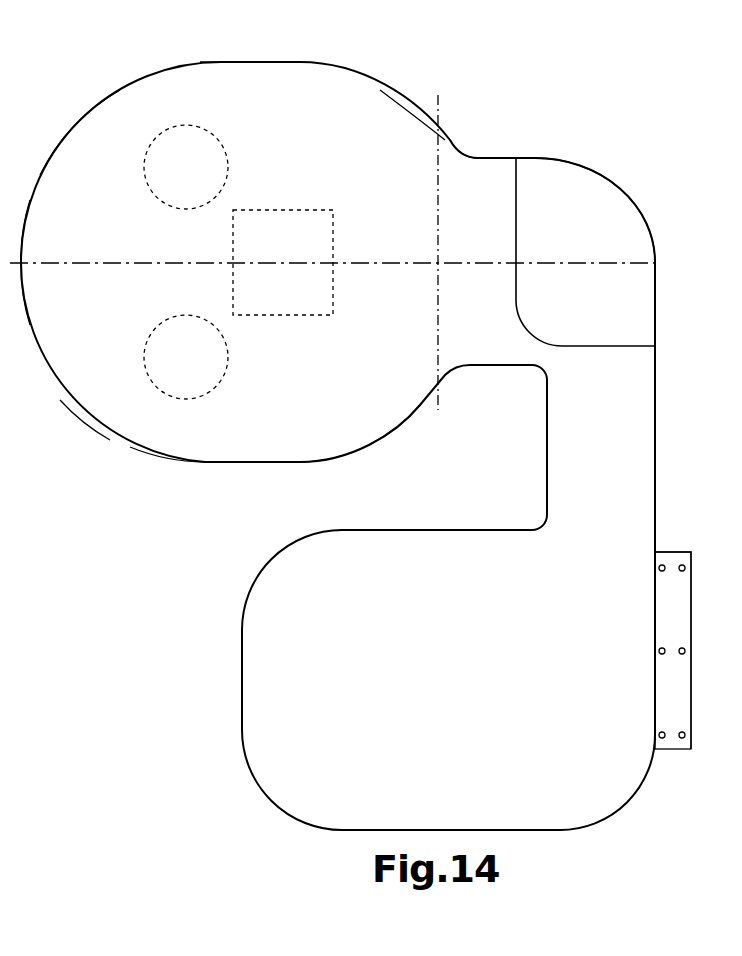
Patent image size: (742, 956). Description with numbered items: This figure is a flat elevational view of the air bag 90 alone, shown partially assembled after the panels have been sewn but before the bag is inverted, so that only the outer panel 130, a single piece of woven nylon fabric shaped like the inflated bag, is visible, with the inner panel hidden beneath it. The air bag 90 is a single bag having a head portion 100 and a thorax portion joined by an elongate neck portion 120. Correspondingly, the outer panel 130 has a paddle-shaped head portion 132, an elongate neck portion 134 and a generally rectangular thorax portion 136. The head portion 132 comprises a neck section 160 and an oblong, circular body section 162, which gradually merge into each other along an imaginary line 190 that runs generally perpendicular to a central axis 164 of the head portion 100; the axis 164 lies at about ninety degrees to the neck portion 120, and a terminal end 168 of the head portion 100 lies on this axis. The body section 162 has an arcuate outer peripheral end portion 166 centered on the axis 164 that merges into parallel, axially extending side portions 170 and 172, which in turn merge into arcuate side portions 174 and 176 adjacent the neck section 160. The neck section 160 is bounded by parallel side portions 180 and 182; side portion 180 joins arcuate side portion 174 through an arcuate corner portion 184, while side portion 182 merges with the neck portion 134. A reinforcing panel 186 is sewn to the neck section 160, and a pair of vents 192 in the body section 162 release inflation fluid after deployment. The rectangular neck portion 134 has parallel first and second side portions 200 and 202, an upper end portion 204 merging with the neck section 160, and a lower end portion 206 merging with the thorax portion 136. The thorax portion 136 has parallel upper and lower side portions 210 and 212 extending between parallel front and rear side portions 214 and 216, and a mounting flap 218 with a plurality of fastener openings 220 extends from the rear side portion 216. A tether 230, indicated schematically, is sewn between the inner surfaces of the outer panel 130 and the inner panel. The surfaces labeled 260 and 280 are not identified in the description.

The air bag 90 is at (123, 558).
The head portion 100 is at (115, 498).
The neck portion 120 is at (505, 467).
The outer panel 130 is at (153, 450).
The head portion 132 is at (82, 438).
The neck portion 134 is at (525, 418).
The thorax portion 136 is at (215, 710).
The neck section 160 is at (648, 223).
The body section 162 is at (274, 58).
The central axis 164 is at (20, 260).
The arcuate outer peripheral end portion 166 is at (40, 175).
The terminal end 168 is at (20, 265).
The side portion 170 is at (252, 62).
The side portion 172 is at (242, 463).
The arcuate side portion 174 is at (408, 108).
The arcuate side portion 176 is at (408, 418).
The side portion 180 is at (537, 157).
The side portion 182 is at (500, 365).
The arcuate corner portion 184 is at (456, 150).
The reinforcing panel 186 is at (517, 235).
The imaginary line 190 is at (437, 296).
The vents 192 is at (227, 175).
The first side portion 200 is at (655, 448).
The second side portion 202 is at (547, 478).
The upper end portion 204 is at (600, 392).
The lower end portion 206 is at (615, 510).
The upper side portion 210 is at (407, 530).
The lower side portion 212 is at (367, 830).
The front side portion 214 is at (242, 633).
The rear side portion 216 is at (655, 685).
The mounting flap 218 is at (692, 680).
The fastener openings 220 is at (662, 649).
The tether 230 is at (335, 232).
The surface 260 is at (0, 386).
The surface 280 is at (0, 462).